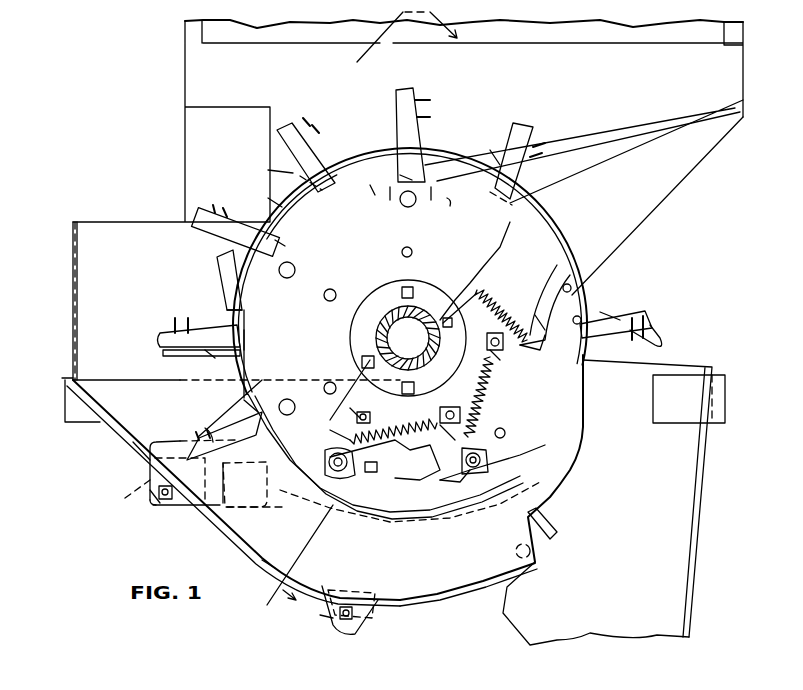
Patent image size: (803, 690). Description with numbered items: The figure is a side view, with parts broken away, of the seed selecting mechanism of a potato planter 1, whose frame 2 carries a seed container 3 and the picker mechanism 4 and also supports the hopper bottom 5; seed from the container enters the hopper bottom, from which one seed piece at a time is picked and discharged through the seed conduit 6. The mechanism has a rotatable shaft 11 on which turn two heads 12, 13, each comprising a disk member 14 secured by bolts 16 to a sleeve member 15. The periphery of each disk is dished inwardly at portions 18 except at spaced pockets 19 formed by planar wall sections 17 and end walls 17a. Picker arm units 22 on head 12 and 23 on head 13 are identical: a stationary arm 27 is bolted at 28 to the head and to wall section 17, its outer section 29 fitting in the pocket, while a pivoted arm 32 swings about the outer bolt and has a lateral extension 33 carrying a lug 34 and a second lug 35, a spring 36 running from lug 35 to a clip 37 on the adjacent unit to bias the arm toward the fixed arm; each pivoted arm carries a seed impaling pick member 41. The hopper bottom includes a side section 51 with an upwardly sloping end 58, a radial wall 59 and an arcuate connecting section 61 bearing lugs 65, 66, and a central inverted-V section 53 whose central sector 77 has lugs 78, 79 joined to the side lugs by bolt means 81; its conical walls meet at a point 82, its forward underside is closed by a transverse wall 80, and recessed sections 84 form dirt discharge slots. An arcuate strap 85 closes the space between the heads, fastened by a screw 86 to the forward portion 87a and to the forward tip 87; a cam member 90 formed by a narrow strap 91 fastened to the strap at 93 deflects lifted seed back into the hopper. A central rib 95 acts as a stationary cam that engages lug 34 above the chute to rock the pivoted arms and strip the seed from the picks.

The potato planter 1 is at (47, 323).
The frame 2 is at (65, 378).
The seed container 3 is at (190, 62).
The seed selecting mechanism 4 is at (586, 213).
The hopper bottom 5 is at (172, 551).
The seed conduit 6 is at (668, 545).
The rotatable shaft 11 is at (398, 338).
The head 12 is at (344, 264).
The head 13 is at (533, 258).
The disk member 14 is at (273, 378).
The sleeve member 15 is at (392, 318).
The bolts 16 is at (412, 290).
The planar wall section 17 is at (272, 226).
The end wall 17a is at (400, 212).
The inwardly dished portion 18 is at (250, 331).
The pocket 19 is at (287, 237).
The picker arm unit 22 is at (195, 251).
The picker arm unit 23 is at (285, 110).
The stationary arm 27 is at (310, 165).
The bolt 28 is at (324, 295).
The radially outwardly extending section 29 is at (654, 343).
The pivoted arm 32 is at (290, 168).
The lateral extension 33 is at (488, 450).
The lug 34 is at (560, 292).
The lug 35 is at (335, 436).
The spring 36 is at (490, 294).
The clip 37 is at (432, 420).
The seed impaling pick member 41 is at (213, 197).
The hopper bottom section 51 is at (135, 435).
The central section 53 is at (569, 497).
The end of hopper bottom section 58 is at (113, 395).
The radial wall section 59 is at (352, 411).
The arcuate connecting section 61 is at (437, 600).
The lug 65 is at (324, 615).
The lug 66 is at (150, 482).
The central sector 77 is at (270, 560).
The apertured lug 78 is at (150, 503).
The apertured lug 79 is at (366, 632).
The transverse wall 80 is at (524, 573).
The bolt means 81 is at (157, 503).
The point 82 is at (163, 448).
The recessed section 84 is at (293, 602).
The arcuate strap 85 is at (437, 175).
The screw 86 is at (240, 466).
The forward tip 87 is at (546, 292).
The forward portion 87a is at (207, 428).
The cam member 90 is at (345, 145).
The strap 91 is at (278, 200).
The fastening point 93 is at (370, 190).
The central rib 95 is at (368, 470).